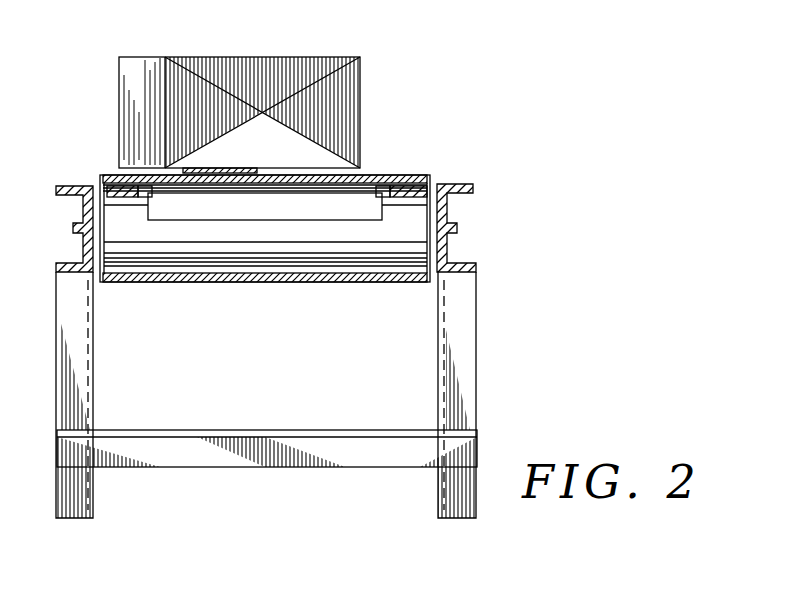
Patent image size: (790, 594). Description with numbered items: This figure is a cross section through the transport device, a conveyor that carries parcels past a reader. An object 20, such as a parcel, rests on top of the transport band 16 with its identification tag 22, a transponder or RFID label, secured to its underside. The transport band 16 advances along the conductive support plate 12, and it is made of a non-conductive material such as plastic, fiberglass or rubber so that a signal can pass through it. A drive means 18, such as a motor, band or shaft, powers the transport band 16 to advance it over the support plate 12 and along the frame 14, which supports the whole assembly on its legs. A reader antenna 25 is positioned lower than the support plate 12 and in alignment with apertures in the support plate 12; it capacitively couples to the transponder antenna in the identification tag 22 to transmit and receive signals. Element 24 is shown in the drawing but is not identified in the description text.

The support plate 12 is at (105, 183).
The frame 14 is at (462, 333).
The transport band 16 is at (388, 175).
The drive means 18 is at (463, 186).
The object 20 is at (350, 87).
The identification tag 22 is at (250, 170).
The insulating layer 24 is at (347, 187).
The reader antenna 25 is at (258, 218).